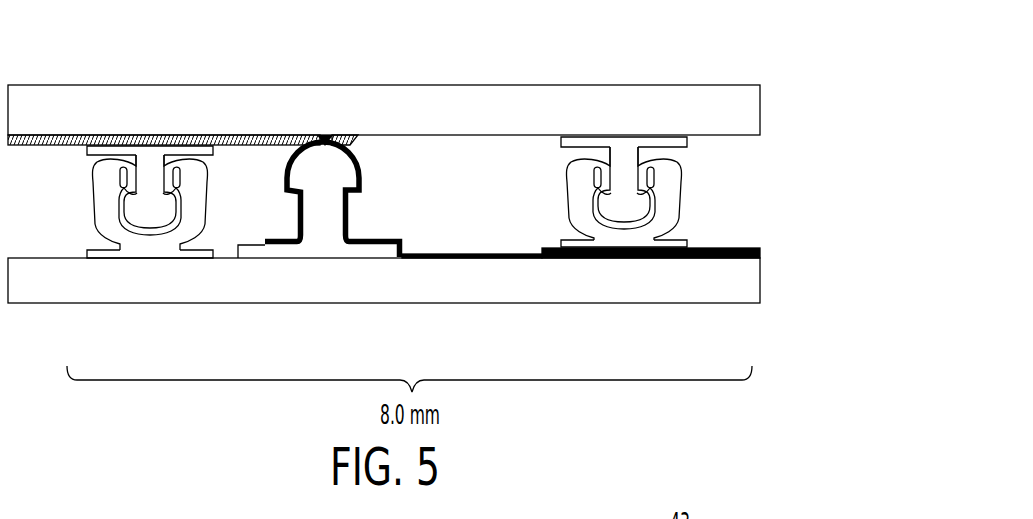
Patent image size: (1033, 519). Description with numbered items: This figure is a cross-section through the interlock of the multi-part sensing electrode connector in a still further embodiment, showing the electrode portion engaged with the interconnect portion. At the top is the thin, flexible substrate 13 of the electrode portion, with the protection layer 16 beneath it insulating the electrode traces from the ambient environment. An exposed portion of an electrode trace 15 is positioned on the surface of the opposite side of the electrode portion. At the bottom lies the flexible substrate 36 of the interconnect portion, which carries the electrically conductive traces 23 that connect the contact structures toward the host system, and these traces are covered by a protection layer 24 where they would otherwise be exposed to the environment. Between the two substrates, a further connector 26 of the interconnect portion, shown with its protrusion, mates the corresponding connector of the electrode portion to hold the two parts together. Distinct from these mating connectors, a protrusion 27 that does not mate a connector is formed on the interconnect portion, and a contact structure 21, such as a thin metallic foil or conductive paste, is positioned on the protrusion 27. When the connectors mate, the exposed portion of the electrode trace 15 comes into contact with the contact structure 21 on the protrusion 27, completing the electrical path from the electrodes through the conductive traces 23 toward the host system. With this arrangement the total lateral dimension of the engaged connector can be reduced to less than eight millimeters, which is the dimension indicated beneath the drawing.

The substrate 13 is at (662, 93).
The protection layer 16 is at (80, 146).
The electrode trace 15 is at (148, 146).
The further connector 26 is at (92, 256).
The contact structure 21 is at (325, 138).
The protrusion 27 is at (338, 178).
The conductive trace 23 is at (458, 254).
The protection layer 24 is at (717, 248).
The substrate 36 is at (698, 297).